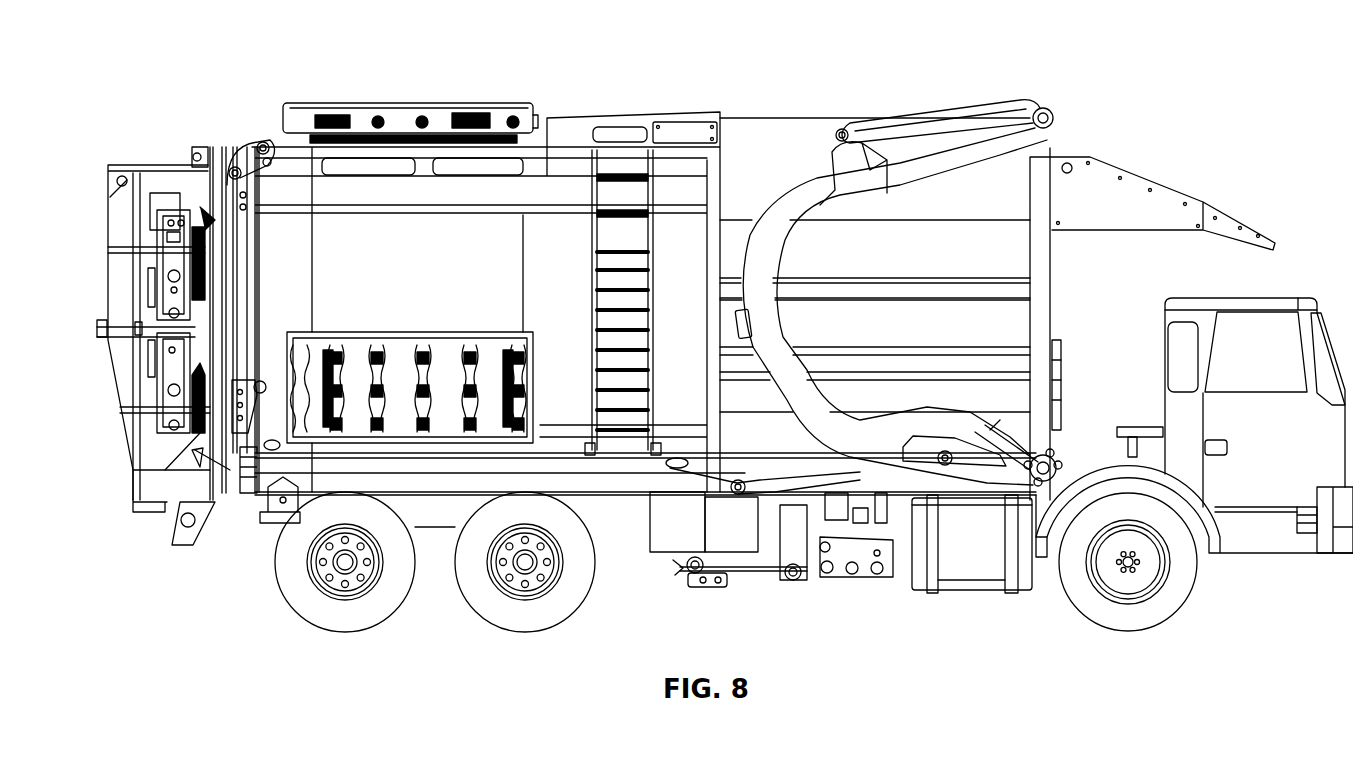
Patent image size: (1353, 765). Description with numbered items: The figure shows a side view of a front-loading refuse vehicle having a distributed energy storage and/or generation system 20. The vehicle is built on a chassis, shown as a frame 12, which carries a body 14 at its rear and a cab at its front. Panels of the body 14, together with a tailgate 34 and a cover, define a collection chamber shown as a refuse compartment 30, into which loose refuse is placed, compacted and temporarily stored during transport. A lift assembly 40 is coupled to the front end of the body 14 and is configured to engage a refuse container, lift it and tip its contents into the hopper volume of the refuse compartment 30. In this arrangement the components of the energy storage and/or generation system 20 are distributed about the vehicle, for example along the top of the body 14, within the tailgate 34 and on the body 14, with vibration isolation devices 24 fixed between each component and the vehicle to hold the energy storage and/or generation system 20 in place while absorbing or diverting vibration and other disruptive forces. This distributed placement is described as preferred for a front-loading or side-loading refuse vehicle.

The frame 12 is at (640, 527).
The body 14 is at (1037, 150).
The energy storage and/or generation system 20 is at (165, 295).
The vibration isolation devices 24 is at (200, 207).
The refuse compartment 30 is at (550, 230).
The tailgate 34 is at (107, 217).
The lift assembly 40 is at (980, 110).